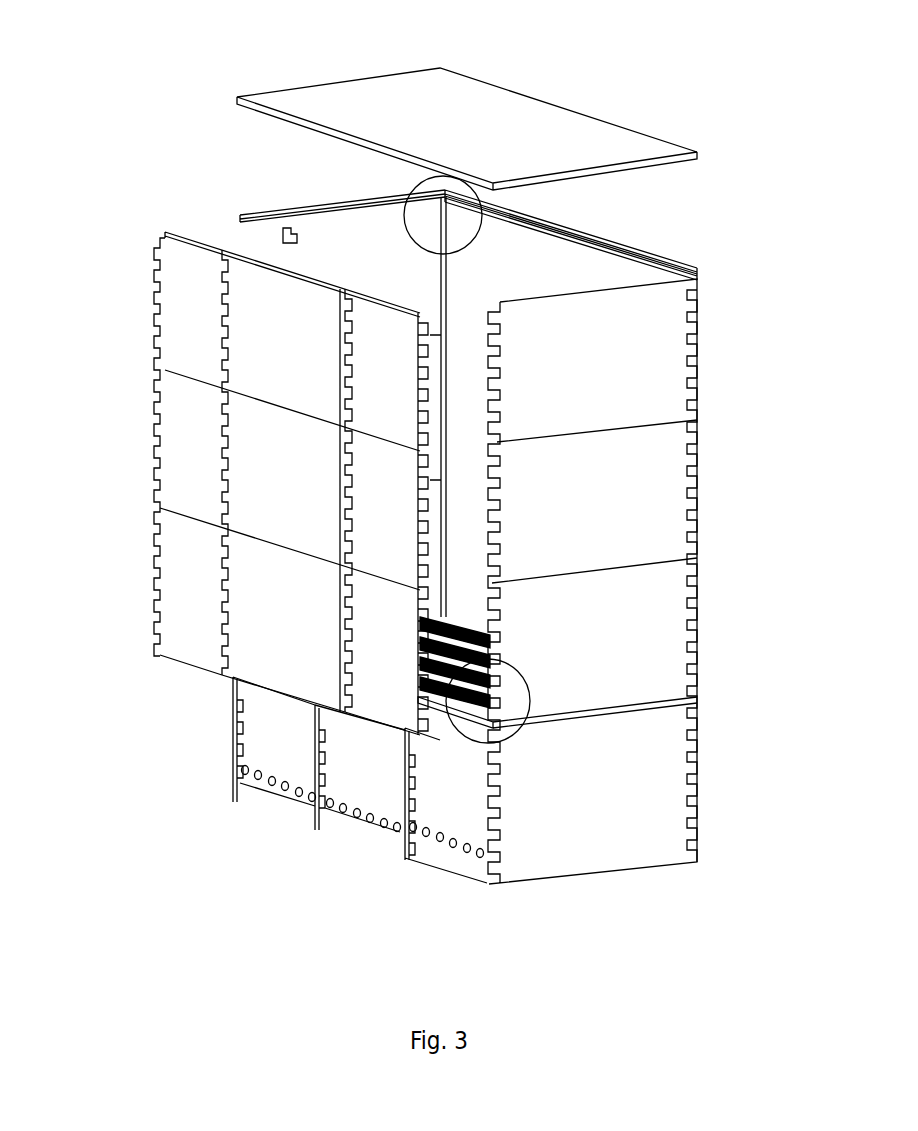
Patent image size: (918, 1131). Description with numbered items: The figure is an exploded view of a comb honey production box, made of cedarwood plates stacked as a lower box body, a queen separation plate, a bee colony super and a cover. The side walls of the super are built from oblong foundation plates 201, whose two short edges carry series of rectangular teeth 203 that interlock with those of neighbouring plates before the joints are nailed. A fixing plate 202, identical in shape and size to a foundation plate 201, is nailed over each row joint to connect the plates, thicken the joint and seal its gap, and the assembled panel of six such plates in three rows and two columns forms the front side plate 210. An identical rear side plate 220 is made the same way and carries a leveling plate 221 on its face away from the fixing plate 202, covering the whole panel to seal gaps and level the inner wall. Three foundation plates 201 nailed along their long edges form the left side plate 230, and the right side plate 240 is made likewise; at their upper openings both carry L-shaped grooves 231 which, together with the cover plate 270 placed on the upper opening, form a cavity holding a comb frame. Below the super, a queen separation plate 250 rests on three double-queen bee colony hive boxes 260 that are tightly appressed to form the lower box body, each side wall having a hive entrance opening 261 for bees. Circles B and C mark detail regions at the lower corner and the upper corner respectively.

The foundation plate 201 is at (193, 307).
The fixing plate 202 is at (288, 337).
The rectangular teeth 203 is at (160, 447).
The front side plate 210 is at (249, 413).
The rear side plate 220 is at (607, 242).
The leveling plate 221 is at (617, 270).
The left side plate 230 is at (338, 230).
The L-shaped groove 231 is at (383, 202).
The right side plate 240 is at (620, 397).
The queen separation plate 250 is at (413, 688).
The double-queen bee colony hive box 260 is at (452, 805).
The hive entrance opening 261 is at (270, 785).
The cover plate 270 is at (563, 137).
The detail region B is at (520, 737).
The detail region C is at (470, 187).